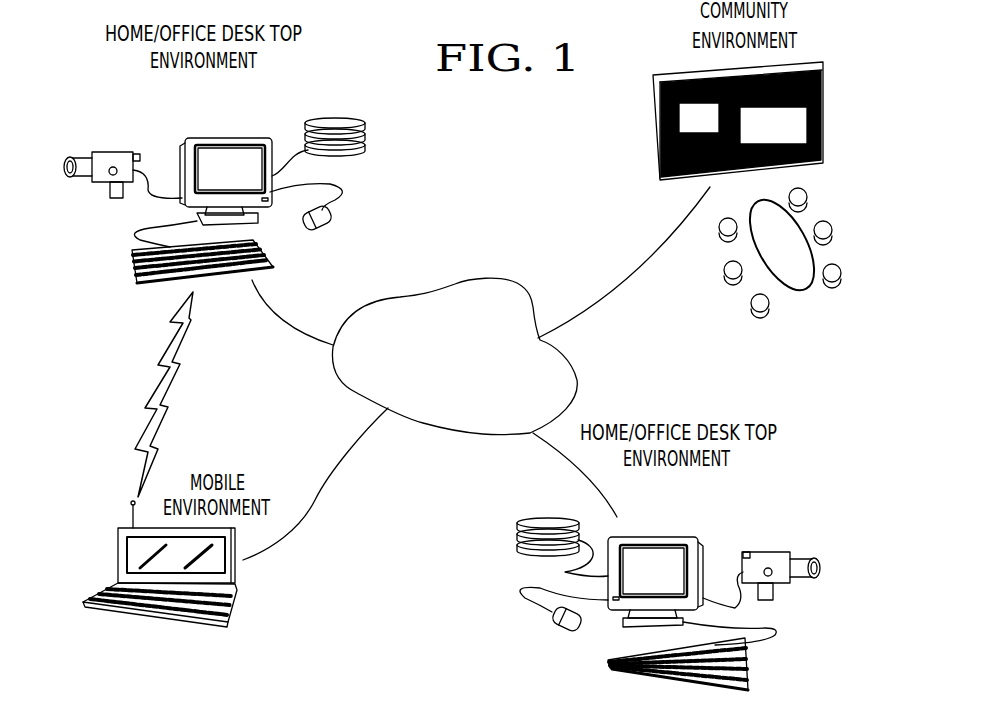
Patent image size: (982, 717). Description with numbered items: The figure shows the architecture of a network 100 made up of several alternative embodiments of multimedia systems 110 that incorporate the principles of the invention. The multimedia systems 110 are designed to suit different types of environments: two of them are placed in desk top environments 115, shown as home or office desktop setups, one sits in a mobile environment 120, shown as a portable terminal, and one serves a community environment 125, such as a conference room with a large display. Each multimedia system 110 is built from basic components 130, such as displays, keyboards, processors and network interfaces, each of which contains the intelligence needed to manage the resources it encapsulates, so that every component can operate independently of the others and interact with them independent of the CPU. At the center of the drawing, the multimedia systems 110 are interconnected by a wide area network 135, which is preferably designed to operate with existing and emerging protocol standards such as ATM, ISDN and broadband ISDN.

The network 100 is at (500, 255).
The multimedia system 110 is at (270, 230).
The desk top environment 115 is at (222, 138).
The mobile environment 120 is at (137, 548).
The community environment 125 is at (653, 150).
The basic component 130 is at (115, 150).
The wide area network 135 is at (455, 433).